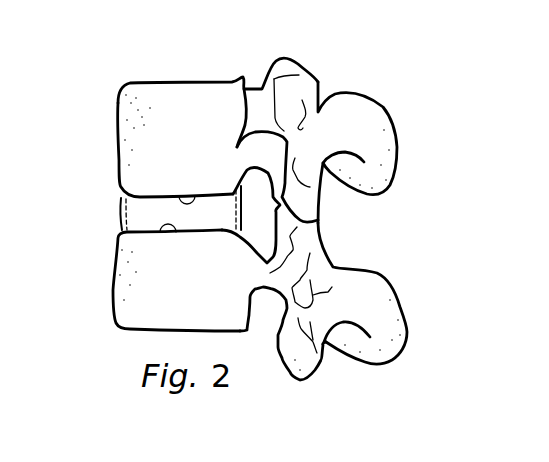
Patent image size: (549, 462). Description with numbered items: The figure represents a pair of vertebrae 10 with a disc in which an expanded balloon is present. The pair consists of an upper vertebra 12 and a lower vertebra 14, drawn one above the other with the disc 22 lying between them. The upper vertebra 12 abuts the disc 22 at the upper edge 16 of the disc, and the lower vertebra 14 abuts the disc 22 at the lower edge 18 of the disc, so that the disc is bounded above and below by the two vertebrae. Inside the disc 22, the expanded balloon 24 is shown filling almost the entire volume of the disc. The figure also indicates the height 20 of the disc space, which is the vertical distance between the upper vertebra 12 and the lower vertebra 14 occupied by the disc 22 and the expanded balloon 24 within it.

The pair of vertebrae 10 is at (397, 91).
The upper vertebra 12 is at (119, 104).
The lower vertebra 14 is at (118, 295).
The upper edge of the disc 16 is at (177, 197).
The lower edge of the disc 18 is at (177, 233).
The height of the disc space 20 is at (57, 192).
The disc 22 is at (118, 211).
The expanded balloon 24 is at (207, 214).